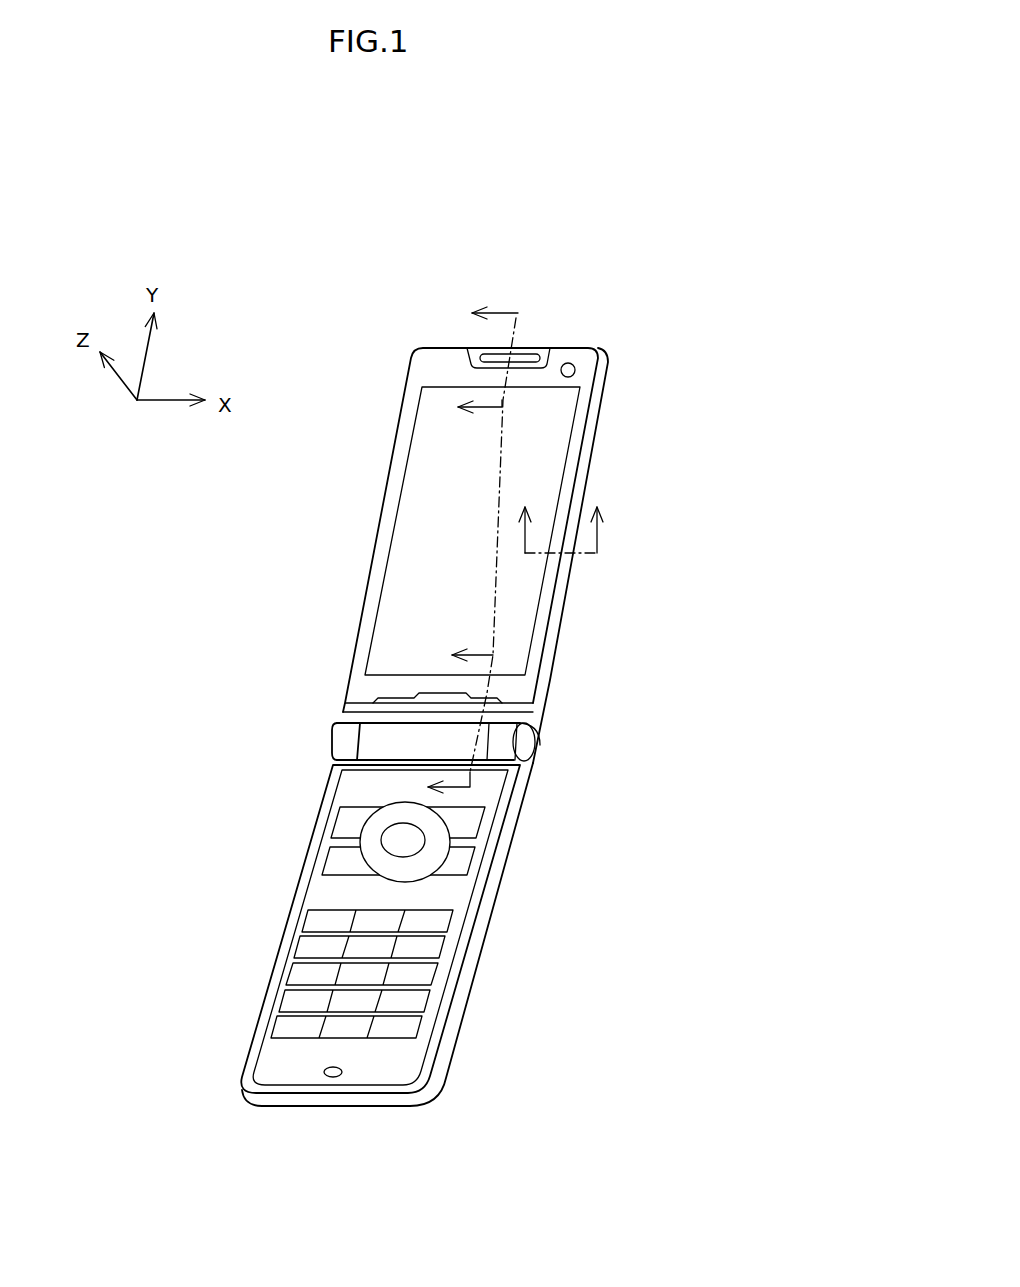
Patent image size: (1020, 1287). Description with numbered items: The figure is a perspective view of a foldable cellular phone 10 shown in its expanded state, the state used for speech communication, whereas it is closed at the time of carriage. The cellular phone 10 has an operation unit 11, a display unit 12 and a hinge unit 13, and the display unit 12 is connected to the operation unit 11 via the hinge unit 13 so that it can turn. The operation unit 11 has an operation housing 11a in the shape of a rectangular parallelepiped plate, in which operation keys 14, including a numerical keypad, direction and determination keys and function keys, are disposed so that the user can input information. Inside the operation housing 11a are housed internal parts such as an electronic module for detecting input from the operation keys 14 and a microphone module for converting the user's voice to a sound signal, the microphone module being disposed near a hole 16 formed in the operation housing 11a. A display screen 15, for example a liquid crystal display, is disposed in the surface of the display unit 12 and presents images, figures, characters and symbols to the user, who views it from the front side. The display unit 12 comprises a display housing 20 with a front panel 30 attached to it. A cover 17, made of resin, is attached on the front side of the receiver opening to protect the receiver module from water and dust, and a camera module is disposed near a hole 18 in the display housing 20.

The cellular phone 10 is at (688, 265).
The operation unit 11 is at (560, 898).
The operation housing 11a is at (487, 885).
The display unit 12 is at (628, 427).
The hinge unit 13 is at (563, 737).
The operation keys 14 is at (312, 948).
The display screen 15 is at (420, 513).
The hole 16 is at (331, 1078).
The cover 17 is at (523, 353).
The hole 18 is at (568, 363).
The display housing 20 is at (562, 587).
The front panel 30 is at (418, 375).